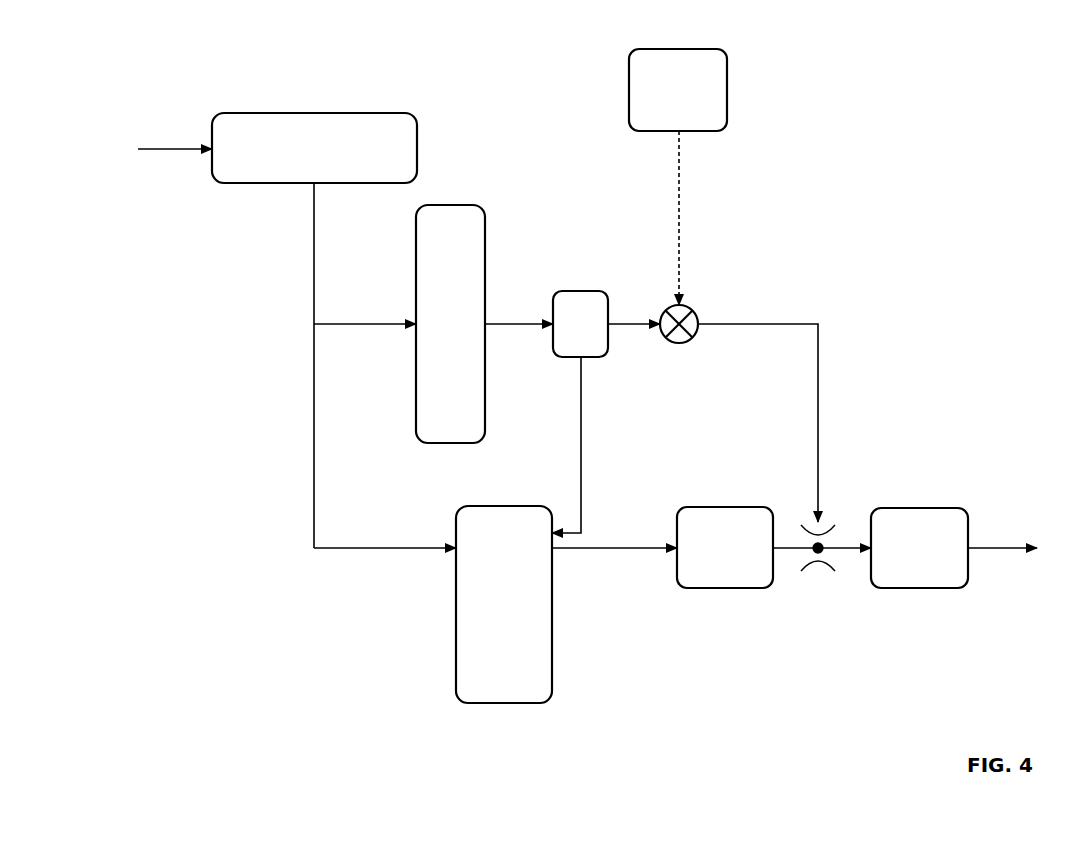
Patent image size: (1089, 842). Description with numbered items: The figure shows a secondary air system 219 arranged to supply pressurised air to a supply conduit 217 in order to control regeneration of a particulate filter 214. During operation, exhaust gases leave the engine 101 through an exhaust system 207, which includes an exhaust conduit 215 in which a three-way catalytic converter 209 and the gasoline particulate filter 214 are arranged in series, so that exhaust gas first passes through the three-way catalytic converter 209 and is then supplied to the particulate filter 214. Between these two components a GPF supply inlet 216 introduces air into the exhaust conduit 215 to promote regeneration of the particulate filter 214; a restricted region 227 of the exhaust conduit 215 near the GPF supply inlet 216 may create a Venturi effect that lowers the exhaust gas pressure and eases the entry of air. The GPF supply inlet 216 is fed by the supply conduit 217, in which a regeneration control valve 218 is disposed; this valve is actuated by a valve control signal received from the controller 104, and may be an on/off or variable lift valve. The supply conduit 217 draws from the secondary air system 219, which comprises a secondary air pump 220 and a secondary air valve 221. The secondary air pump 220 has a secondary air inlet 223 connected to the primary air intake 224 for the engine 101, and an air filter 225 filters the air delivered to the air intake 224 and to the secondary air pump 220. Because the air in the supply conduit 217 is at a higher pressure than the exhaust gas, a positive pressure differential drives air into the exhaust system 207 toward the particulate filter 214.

The air filter 225 is at (296, 161).
The air intake 224 is at (314, 246).
The secondary air inlet 223 is at (387, 325).
The secondary air pump 220 is at (432, 335).
The secondary air valve 221 is at (562, 335).
The regeneration control valve 218 is at (689, 307).
The controller 104 is at (660, 96).
The secondary air system 219 is at (535, 230).
The supply conduit 217 is at (797, 325).
The exhaust system 207 is at (923, 367).
The engine 101 is at (486, 559).
The three-way catalytic converter 209 is at (707, 559).
The exhaust conduit 215 is at (613, 548).
The GPF supply inlet 216 is at (823, 542).
The restricted region 227 is at (812, 557).
The particulate filter 214 is at (901, 559).